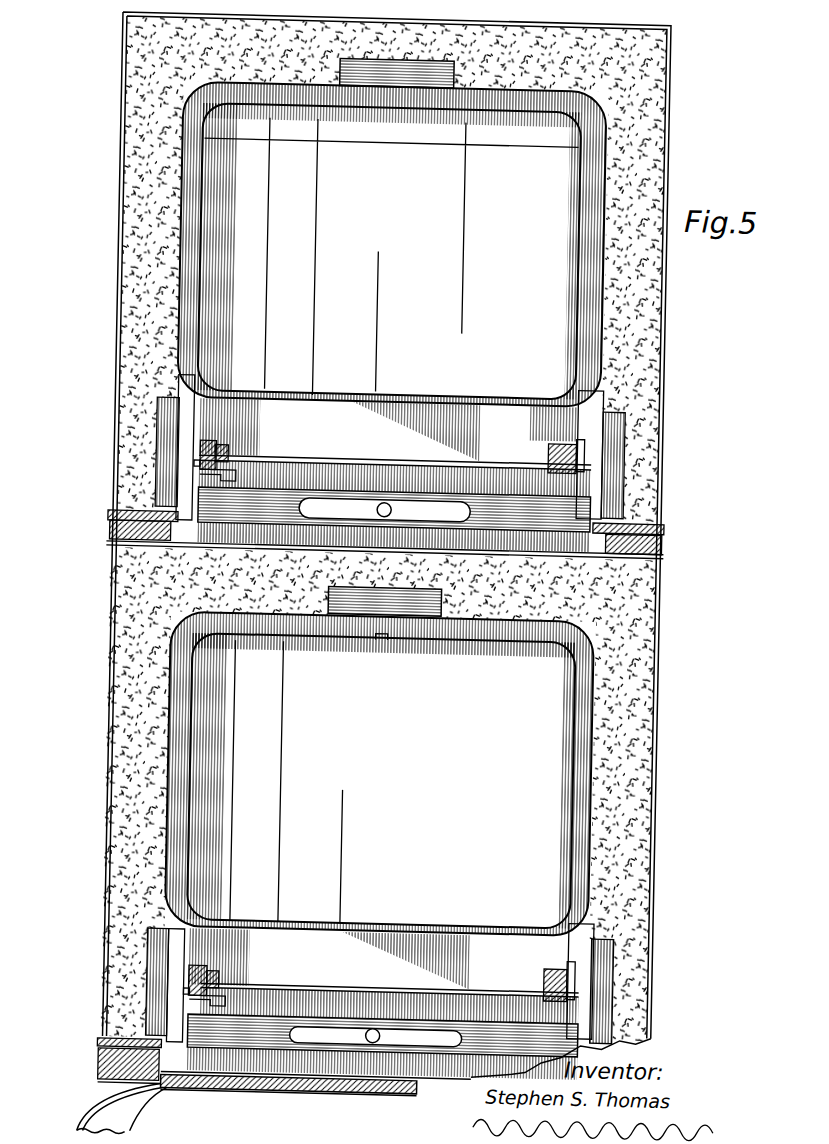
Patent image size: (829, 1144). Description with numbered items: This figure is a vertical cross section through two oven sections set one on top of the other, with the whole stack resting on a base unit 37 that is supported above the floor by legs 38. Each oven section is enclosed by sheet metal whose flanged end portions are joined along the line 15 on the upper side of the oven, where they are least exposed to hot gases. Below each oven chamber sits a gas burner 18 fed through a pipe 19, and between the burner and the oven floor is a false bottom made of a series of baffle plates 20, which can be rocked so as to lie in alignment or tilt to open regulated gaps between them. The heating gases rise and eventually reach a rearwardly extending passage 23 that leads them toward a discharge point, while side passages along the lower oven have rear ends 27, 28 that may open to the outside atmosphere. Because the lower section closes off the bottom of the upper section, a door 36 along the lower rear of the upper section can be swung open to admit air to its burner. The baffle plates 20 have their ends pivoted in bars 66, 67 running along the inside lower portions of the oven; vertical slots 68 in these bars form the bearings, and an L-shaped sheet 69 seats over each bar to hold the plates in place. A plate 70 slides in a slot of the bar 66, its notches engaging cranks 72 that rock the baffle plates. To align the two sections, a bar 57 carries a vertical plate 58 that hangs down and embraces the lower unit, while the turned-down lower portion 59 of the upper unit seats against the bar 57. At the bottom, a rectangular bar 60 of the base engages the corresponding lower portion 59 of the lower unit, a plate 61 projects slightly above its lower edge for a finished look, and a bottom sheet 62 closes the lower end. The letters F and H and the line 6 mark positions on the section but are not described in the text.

The section line 6- 6 is at (98, 498).
The line of joinder 15 is at (398, 634).
The gas burner 18 is at (414, 500).
The pipe 19 is at (389, 498).
The baffle plates 20 is at (345, 453).
The rearwardly extending passage 23 is at (436, 80).
The rear end of side passage 27 is at (193, 372).
The rear end of side passage 28 is at (606, 378).
The door 36 is at (218, 547).
The base unit 37 is at (243, 1098).
The legs 38 is at (130, 1106).
The bar 57 is at (128, 519).
The vertical plate 58 is at (128, 532).
The turned-down lower portion 59 is at (126, 545).
The rectangular bar 60 is at (140, 1066).
The plate 61 is at (120, 1042).
The bottom sheet 62 is at (328, 1088).
The bar 66 is at (210, 450).
The bar 67 is at (600, 448).
The vertical slots 68 is at (234, 447).
The L-shaped sheet 69 is at (218, 445).
The plate 70 is at (205, 462).
The cranks 72 is at (250, 474).
The frame member F is at (175, 425).
The member H is at (616, 420).